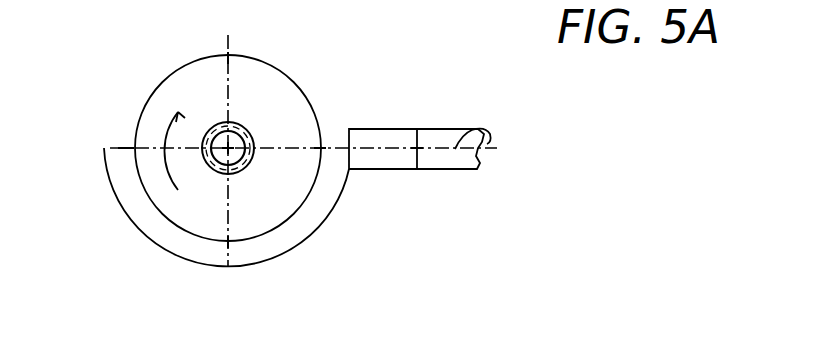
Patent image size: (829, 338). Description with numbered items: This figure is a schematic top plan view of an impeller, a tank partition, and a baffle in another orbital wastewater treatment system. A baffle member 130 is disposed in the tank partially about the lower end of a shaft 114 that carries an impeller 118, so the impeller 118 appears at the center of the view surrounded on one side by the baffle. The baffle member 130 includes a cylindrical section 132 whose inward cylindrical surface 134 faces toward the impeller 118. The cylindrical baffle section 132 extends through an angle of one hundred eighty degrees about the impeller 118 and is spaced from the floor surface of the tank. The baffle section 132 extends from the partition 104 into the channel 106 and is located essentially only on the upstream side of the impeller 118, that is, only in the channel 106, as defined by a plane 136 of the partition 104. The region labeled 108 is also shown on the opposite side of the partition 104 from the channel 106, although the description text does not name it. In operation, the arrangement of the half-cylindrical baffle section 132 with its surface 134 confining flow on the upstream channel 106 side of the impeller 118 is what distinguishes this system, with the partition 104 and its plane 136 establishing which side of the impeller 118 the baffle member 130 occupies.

The partition 104 is at (438, 135).
The channel 106 is at (523, 247).
The first side 108 is at (414, 62).
The shaft 114 is at (237, 128).
The impeller 118 is at (124, 148).
The baffle member 130 is at (150, 245).
The cylindrical section 132 is at (302, 248).
The cylindrical surface 134 is at (334, 219).
The plane 136 is at (488, 117).